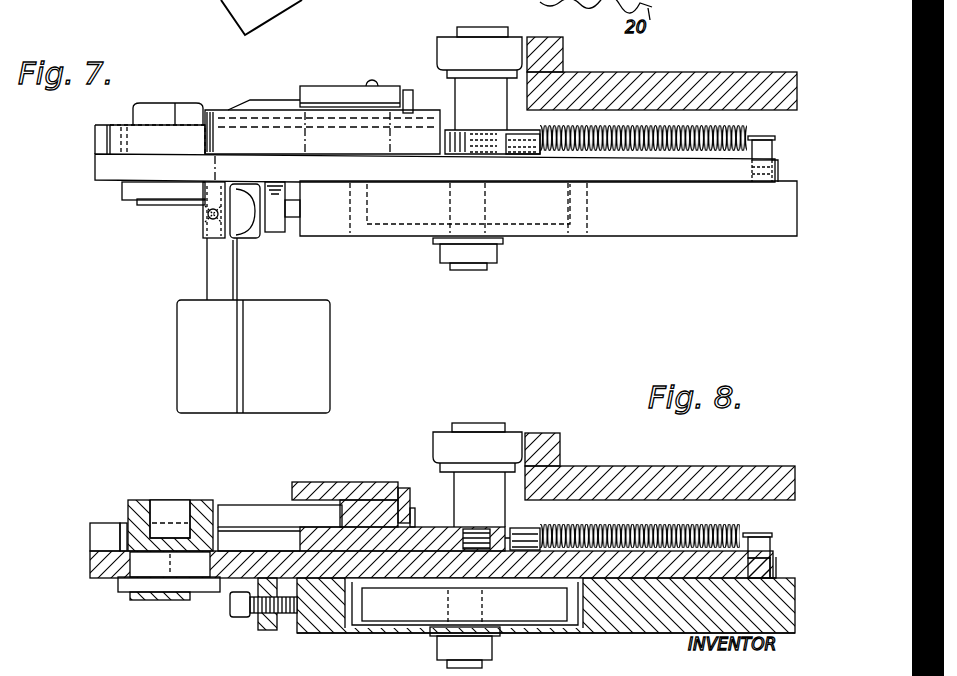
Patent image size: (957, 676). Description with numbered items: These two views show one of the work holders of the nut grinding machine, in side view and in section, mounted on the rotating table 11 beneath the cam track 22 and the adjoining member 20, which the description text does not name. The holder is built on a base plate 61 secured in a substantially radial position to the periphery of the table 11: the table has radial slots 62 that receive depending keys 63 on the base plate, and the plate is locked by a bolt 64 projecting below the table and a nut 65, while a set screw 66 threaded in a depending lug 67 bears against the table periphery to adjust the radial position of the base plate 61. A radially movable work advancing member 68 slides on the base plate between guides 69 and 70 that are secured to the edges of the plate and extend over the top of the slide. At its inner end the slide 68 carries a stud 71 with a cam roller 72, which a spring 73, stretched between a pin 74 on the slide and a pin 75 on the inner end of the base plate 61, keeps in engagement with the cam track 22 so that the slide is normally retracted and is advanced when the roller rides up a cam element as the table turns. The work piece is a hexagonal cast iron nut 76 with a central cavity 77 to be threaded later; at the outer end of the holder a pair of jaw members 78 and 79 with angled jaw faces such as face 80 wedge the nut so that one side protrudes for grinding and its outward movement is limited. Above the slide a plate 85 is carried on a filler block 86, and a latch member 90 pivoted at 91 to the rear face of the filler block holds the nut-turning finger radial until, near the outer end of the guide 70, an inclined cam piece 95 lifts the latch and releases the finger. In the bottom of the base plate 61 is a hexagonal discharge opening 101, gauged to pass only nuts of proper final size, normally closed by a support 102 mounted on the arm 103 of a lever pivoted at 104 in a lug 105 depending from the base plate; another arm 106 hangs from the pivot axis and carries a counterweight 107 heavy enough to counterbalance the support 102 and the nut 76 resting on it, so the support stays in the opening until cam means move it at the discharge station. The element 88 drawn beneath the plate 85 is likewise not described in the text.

In FIG. 7, the table 11 is at (652, 230).
In FIG. 8, the table 11 is at (324, 618).
In FIG. 7, the work table 20 is at (676, 86).
In FIG. 8, the work table 20 is at (668, 480).
In FIG. 7, the cam track 22 is at (556, 58).
In FIG. 8, the cam track 22 is at (554, 452).
In FIG. 7, the base plate 61 is at (418, 172).
In FIG. 8, the base plate 61 is at (102, 562).
In FIG. 8, the radial slots 62 is at (360, 612).
In FIG. 8, the depending keys 63 is at (410, 608).
In FIG. 7, the bolt 64 is at (488, 268).
In FIG. 8, the bolt 64 is at (492, 632).
In FIG. 7, the nut 65 is at (492, 252).
In FIG. 8, the nut 65 is at (488, 656).
In FIG. 8, the set screw 66 is at (250, 616).
In FIG. 8, the depending lug 67 is at (266, 626).
In FIG. 7, the work advancing member 68 is at (456, 160).
In FIG. 8, the work advancing member 68 is at (440, 535).
In FIG. 8, the guide 69 is at (252, 512).
In FIG. 7, the guide 70 is at (272, 112).
In FIG. 7, the stud 71 is at (488, 45).
In FIG. 8, the stud 71 is at (460, 484).
In FIG. 7, the cam roller 72 is at (466, 42).
In FIG. 8, the cam roller 72 is at (486, 445).
In FIG. 7, the spring 73 is at (620, 155).
In FIG. 8, the spring 73 is at (614, 530).
In FIG. 7, the pin 74 is at (540, 158).
In FIG. 8, the pin 74 is at (520, 527).
In FIG. 7, the pin 75 is at (760, 138).
In FIG. 8, the pin 75 is at (762, 535).
In FIG. 7, the hexagonal cast iron nut 76 is at (160, 112).
In FIG. 8, the hexagonal cast iron nut 76 is at (143, 506).
In FIG. 8, the central cavity 77 is at (180, 515).
In FIG. 8, the jaw member 78 is at (100, 522).
In FIG. 7, the jaw member 79 is at (118, 143).
In FIG. 8, the jaw face 80 is at (106, 540).
In FIG. 7, the plate 85 is at (320, 88).
In FIG. 8, the plate 85 is at (325, 488).
In FIG. 8, the filler block 86 is at (365, 505).
In FIG. 7, the shim 88 is at (333, 104).
In FIG. 7, the latch member 90 is at (408, 97).
In FIG. 8, the latch member 90 is at (405, 494).
In FIG. 8, the pivot 91 is at (414, 512).
In FIG. 7, the inclined cam piece 95 is at (246, 98).
In FIG. 8, the discharge opening 101 is at (128, 568).
In FIG. 7, the support 102 is at (130, 186).
In FIG. 8, the support 102 is at (152, 586).
In FIG. 7, the arm 103 is at (152, 203).
In FIG. 8, the arm 103 is at (170, 600).
In FIG. 7, the pivot 104 is at (208, 216).
In FIG. 7, the lug 105 is at (210, 237).
In FIG. 7, the arm 106 is at (240, 290).
In FIG. 7, the counterweight 107 is at (290, 312).